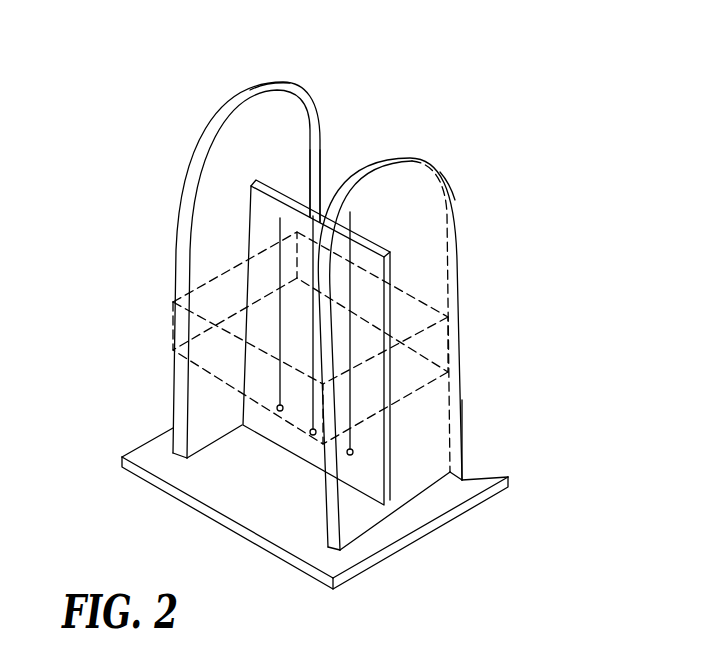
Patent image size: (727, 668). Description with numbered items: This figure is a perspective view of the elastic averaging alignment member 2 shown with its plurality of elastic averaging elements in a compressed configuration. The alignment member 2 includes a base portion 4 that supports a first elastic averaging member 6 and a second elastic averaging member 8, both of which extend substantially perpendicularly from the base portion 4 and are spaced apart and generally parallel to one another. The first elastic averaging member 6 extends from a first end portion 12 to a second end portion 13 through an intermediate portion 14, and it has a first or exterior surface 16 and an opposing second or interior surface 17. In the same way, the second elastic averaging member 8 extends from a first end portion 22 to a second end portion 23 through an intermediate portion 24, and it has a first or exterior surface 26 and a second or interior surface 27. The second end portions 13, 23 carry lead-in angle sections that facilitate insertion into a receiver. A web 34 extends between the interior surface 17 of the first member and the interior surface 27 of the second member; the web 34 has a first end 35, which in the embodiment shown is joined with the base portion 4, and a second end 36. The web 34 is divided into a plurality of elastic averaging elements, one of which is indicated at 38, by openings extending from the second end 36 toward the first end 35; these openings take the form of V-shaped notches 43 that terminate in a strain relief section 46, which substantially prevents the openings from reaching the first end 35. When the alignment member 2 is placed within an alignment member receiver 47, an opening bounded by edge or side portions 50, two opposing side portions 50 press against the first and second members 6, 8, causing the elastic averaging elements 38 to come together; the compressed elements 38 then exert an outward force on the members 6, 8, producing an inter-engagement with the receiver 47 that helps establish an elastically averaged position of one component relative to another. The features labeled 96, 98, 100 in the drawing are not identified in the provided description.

The elastic averaging alignment member 2 is at (100, 135).
The base portion 4 is at (140, 447).
The first elastic averaging member 6 is at (150, 333).
The second elastic averaging member 8 is at (490, 426).
The first end portion 12 is at (189, 458).
The second end portion 13 is at (247, 85).
The intermediate portion 14 is at (212, 196).
The first or exterior surface 16 is at (173, 303).
The second or interior surface 17 is at (283, 118).
The first end portion 22 is at (372, 532).
The second end portion 23 is at (405, 157).
The intermediate portion 24 is at (428, 218).
The first or exterior surface 26 is at (432, 460).
The second or interior surface 27 is at (323, 516).
The web 34 is at (215, 385).
The first end 35 is at (278, 410).
The second end 36 is at (317, 233).
The elastic averaging element 38 is at (308, 390).
The V-shaped notch 43 is at (290, 320).
The strain relief section 46 is at (312, 430).
The alignment member receiver 47 is at (217, 273).
The edge or side portion 50 is at (242, 135).
The device right edge 96 is at (438, 355).
The device corner 98 is at (419, 333).
The device left edge 100 is at (197, 302).